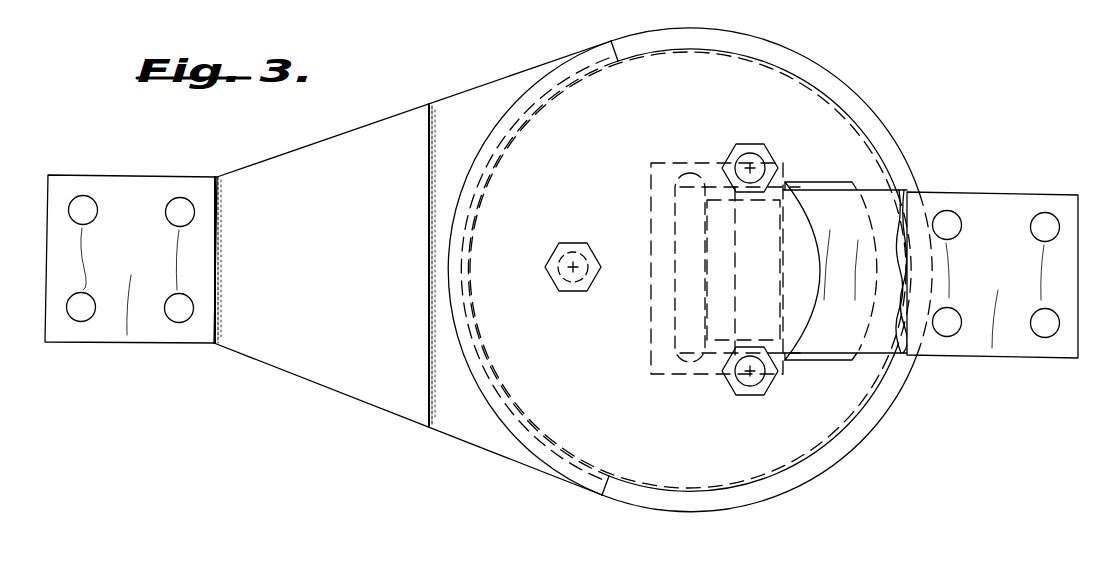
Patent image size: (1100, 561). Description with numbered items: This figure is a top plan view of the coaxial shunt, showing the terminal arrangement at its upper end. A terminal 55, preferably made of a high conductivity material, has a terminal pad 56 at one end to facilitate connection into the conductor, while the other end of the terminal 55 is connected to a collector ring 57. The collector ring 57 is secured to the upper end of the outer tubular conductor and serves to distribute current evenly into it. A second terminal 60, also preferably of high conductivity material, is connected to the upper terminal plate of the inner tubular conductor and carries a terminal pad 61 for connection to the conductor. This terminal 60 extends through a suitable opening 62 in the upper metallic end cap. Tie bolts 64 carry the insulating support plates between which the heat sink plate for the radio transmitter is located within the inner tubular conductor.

The terminal 55 is at (321, 273).
The terminal pad 56 is at (146, 266).
The collector ring 57 is at (832, 74).
The terminal 60 is at (882, 188).
The terminal pad 61 is at (1011, 280).
The opening 62 is at (815, 188).
The tie bolts 64 is at (752, 146).